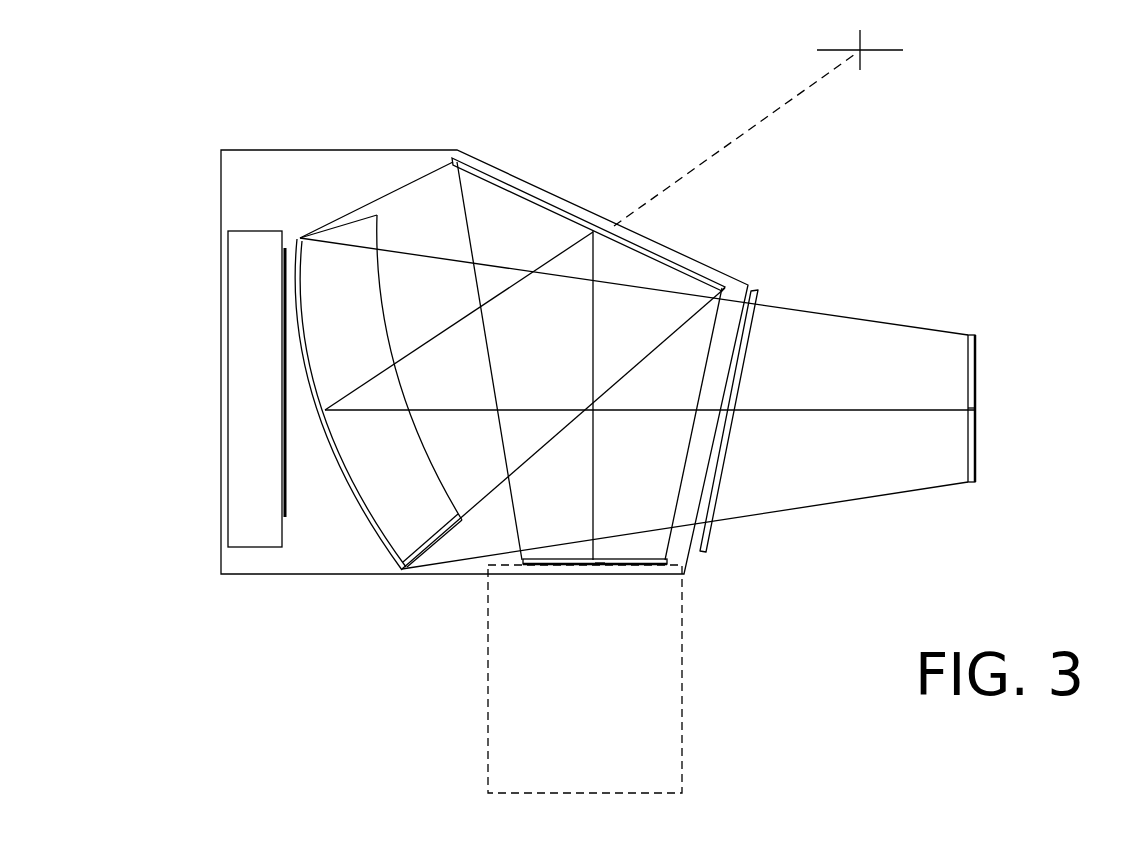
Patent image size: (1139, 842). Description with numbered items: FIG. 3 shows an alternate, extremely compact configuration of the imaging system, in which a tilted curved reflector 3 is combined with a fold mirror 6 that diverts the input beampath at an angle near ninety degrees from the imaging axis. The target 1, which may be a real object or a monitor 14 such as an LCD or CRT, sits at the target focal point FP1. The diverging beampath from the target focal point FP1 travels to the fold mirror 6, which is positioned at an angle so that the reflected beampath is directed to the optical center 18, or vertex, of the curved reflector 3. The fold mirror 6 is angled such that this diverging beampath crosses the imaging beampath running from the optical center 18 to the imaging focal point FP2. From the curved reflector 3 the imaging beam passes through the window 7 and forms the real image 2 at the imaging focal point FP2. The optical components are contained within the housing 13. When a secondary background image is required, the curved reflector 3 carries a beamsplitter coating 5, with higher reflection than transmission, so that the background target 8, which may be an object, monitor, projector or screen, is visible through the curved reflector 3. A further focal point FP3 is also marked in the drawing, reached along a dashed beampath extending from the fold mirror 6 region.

The target 1 is at (648, 565).
The real image 2 is at (975, 448).
The curved reflector 3 is at (373, 530).
The beamsplitter coating 5 is at (305, 270).
The fold mirror 6 is at (512, 185).
The window 7 is at (707, 542).
The background target 8 is at (275, 395).
The housing 13 is at (240, 150).
The monitor 14 is at (488, 647).
The optical center 18 is at (325, 402).
The target focal point FP1 is at (600, 567).
The imaging focal point FP2 is at (973, 402).
The third focal plane FP3 is at (865, 55).